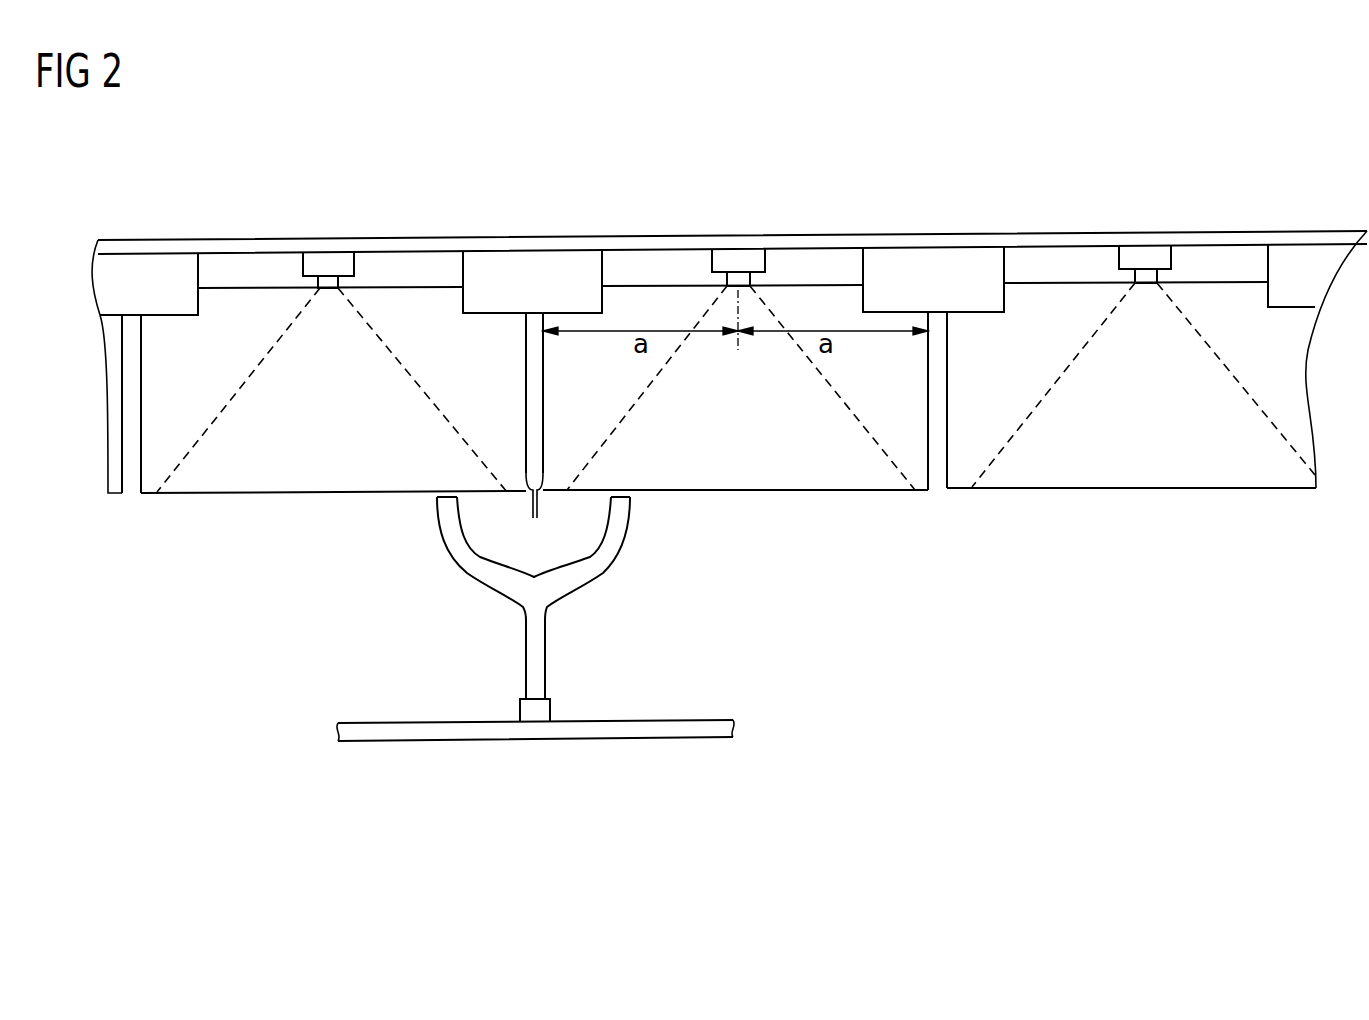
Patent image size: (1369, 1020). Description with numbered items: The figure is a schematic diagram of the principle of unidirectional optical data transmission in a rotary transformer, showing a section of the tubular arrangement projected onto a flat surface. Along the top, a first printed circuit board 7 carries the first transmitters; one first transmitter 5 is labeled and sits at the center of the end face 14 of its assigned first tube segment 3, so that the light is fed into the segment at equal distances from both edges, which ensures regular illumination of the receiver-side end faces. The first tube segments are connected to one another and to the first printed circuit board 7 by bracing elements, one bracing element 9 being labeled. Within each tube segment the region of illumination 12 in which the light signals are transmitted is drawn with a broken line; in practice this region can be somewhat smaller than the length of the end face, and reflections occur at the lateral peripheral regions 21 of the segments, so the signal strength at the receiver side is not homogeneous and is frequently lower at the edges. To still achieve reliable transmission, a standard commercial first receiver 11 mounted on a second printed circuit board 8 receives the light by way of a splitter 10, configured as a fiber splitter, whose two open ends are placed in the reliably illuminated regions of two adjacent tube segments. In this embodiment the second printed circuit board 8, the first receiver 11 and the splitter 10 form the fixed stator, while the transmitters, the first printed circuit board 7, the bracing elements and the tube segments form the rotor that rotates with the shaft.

The first tube segment 3 is at (420, 310).
The first transmitter 5 is at (330, 265).
The first printed circuit board 7 is at (1236, 238).
The second printed circuit board 8 is at (676, 735).
The bracing element 9 is at (497, 265).
The splitter 10 is at (485, 567).
The first receiver 11 is at (547, 708).
The region of illumination 12 is at (868, 472).
The end face 14 is at (231, 285).
The lateral peripheral region 21 is at (534, 513).